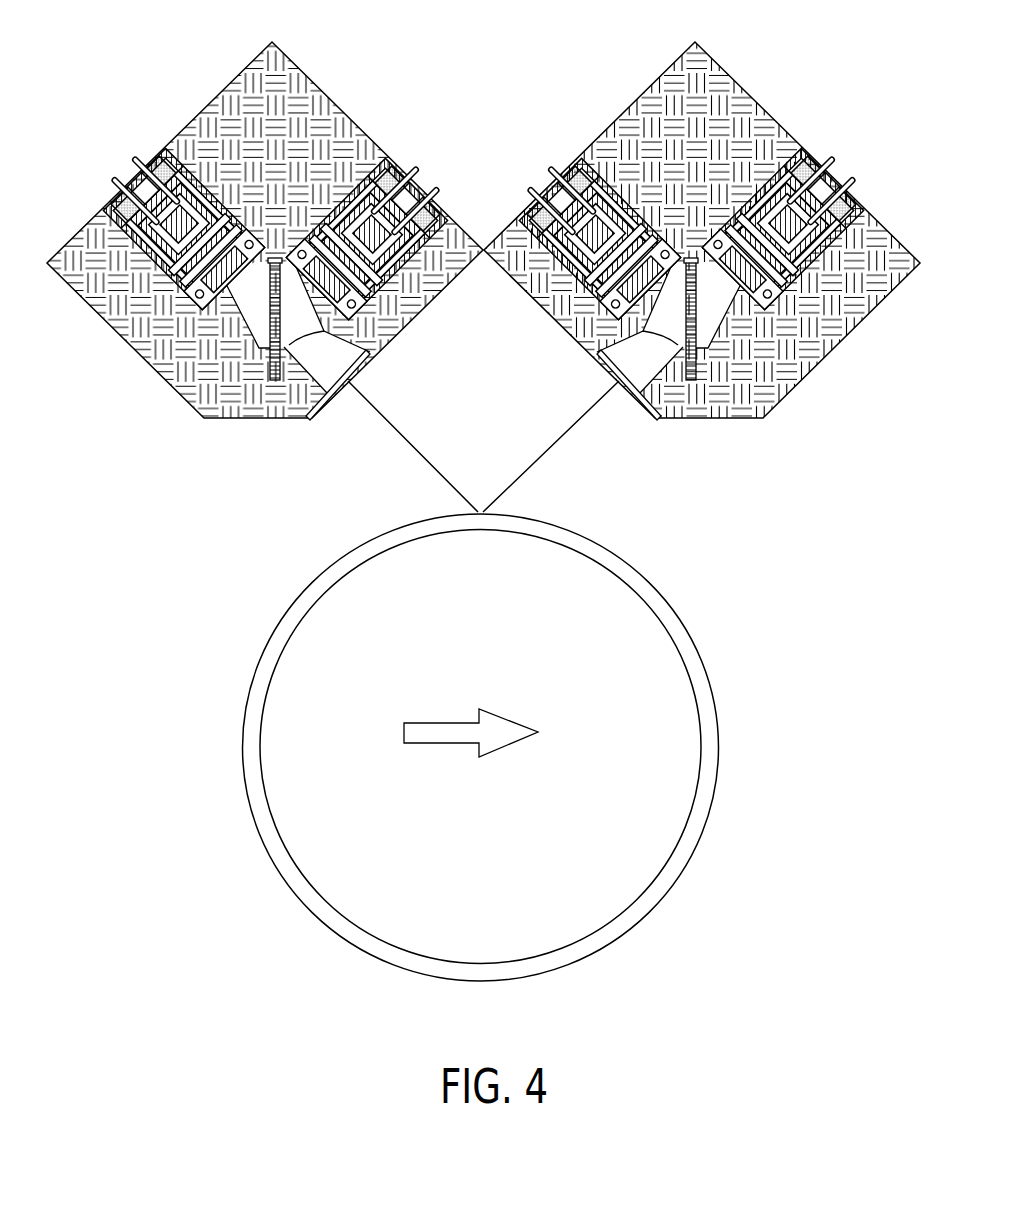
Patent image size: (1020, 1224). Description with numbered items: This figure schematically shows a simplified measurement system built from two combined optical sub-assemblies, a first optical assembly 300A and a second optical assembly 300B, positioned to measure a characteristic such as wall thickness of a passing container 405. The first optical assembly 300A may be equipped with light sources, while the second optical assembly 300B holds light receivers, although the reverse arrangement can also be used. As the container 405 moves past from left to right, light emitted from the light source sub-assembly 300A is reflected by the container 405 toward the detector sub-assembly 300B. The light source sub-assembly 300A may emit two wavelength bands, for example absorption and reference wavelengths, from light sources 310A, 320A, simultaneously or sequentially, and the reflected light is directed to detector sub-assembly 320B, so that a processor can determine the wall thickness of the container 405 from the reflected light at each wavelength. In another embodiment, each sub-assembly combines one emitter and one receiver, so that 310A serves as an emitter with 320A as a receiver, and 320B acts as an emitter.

The first optical assembly 300A is at (165, 70).
The second optical assembly 300B is at (815, 96).
The light source 310A is at (338, 165).
The light source 320A is at (143, 290).
The detector sub-assembly 320B is at (835, 290).
The container 405 is at (770, 792).